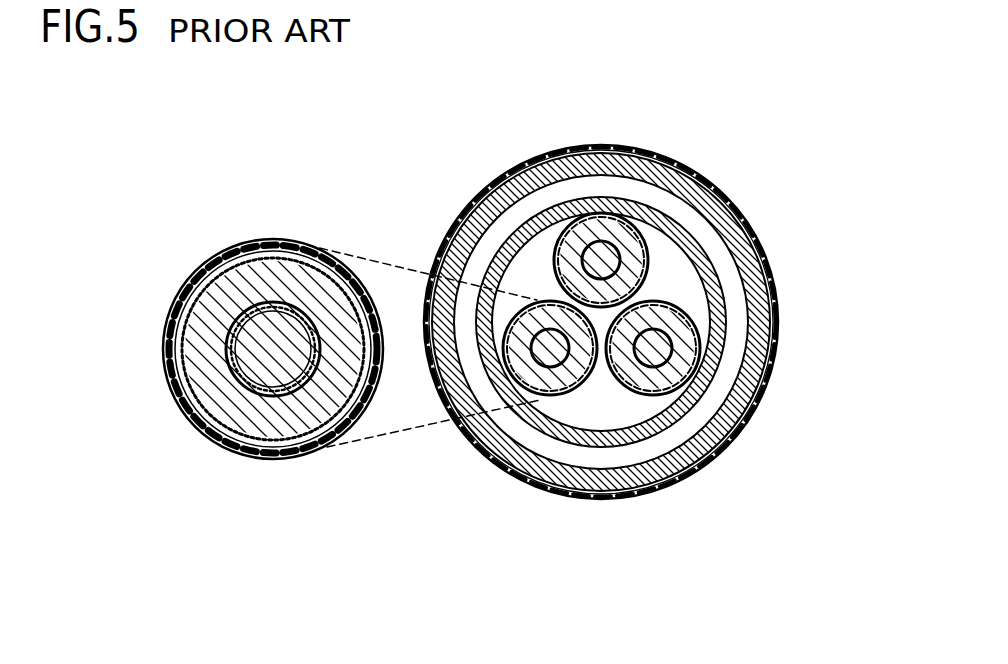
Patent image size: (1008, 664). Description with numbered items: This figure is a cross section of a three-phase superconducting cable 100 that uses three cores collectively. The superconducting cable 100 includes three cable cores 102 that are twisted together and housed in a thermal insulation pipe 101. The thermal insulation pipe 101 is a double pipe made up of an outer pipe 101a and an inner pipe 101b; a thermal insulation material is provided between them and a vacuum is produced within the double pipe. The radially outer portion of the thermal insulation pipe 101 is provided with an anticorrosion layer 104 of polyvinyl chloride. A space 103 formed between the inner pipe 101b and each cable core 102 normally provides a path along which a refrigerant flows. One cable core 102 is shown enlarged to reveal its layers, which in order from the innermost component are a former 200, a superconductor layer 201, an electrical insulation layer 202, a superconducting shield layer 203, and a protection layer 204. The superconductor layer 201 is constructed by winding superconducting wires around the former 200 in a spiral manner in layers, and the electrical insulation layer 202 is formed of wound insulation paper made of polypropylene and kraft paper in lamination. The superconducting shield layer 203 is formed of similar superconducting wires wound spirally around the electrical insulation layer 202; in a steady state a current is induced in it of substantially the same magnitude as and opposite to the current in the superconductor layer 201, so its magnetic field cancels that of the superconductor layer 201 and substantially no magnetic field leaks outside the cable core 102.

The superconducting cable 100 is at (510, 508).
The thermal insulation pipe 101 is at (835, 122).
The outer pipe 101a is at (747, 230).
The inner pipe 101b is at (690, 178).
The cable core 102 is at (544, 231).
The space 103 is at (695, 302).
The anticorrosion layer 104 is at (765, 383).
The former 200 is at (237, 343).
The superconductor layer 201 is at (233, 367).
The electrical insulation layer 202 is at (233, 424).
The superconducting shield layer 203 is at (237, 453).
The protection layer 204 is at (295, 460).